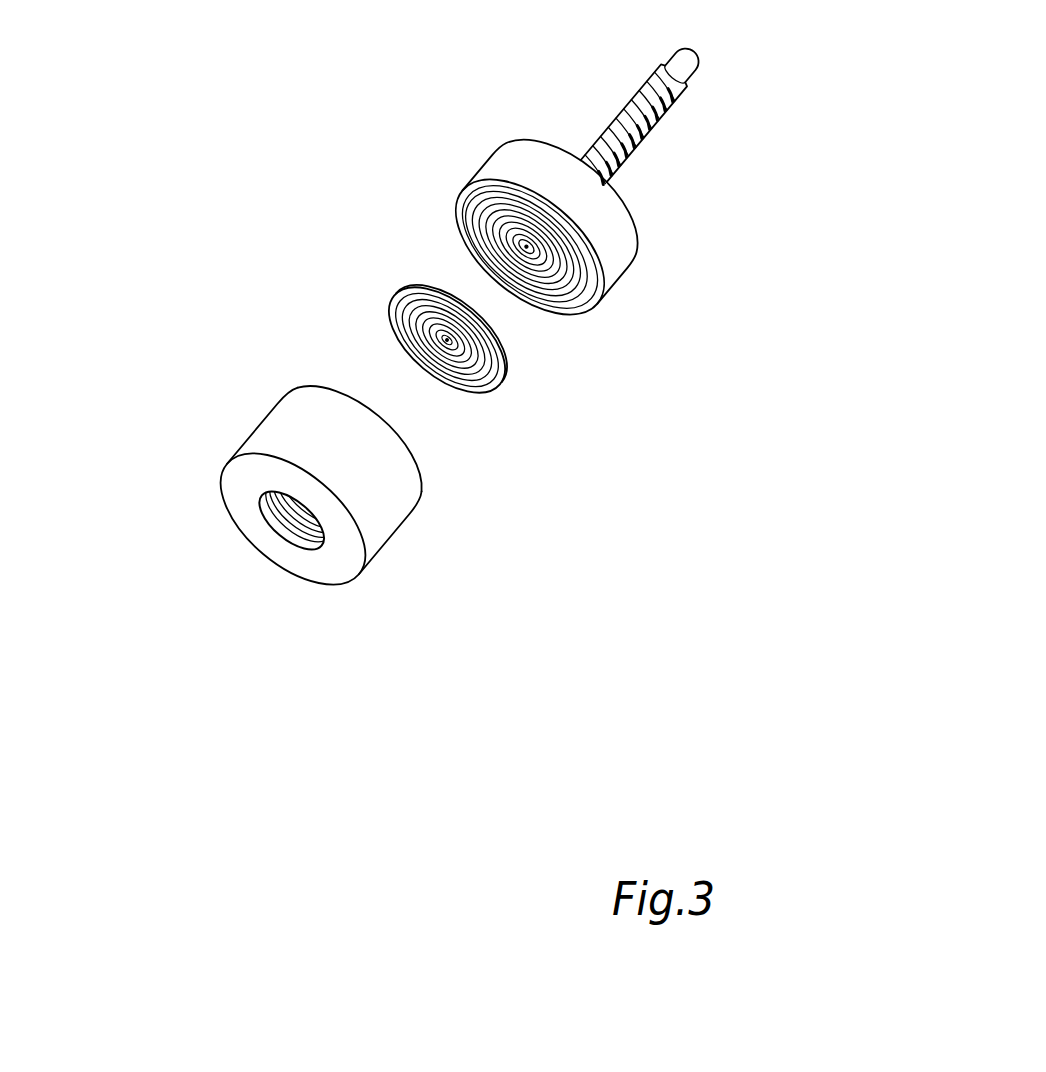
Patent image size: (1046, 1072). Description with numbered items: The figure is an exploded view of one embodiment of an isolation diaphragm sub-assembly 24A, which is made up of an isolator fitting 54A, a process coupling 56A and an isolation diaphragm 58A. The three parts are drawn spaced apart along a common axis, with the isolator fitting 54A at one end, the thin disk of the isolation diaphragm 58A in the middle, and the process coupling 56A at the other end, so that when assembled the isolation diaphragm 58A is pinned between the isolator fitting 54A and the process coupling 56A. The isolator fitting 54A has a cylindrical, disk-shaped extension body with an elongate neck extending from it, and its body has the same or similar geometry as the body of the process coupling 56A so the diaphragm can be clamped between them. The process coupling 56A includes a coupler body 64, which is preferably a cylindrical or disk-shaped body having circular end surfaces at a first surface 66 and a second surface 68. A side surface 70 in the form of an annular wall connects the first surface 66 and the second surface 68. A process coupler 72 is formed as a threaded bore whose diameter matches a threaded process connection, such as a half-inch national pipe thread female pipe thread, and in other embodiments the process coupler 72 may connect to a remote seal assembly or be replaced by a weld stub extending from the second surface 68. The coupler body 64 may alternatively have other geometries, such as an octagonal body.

The isolation diaphragm sub-assembly 24A is at (448, 152).
The isolator fitting 54A is at (672, 249).
The isolation diaphragm 58A is at (518, 398).
The process coupling 56A is at (200, 544).
The coupler body 64 is at (268, 419).
The first surface 66 is at (348, 390).
The second surface 68 is at (337, 563).
The side surface 70 is at (387, 500).
The process coupler 72 is at (288, 535).